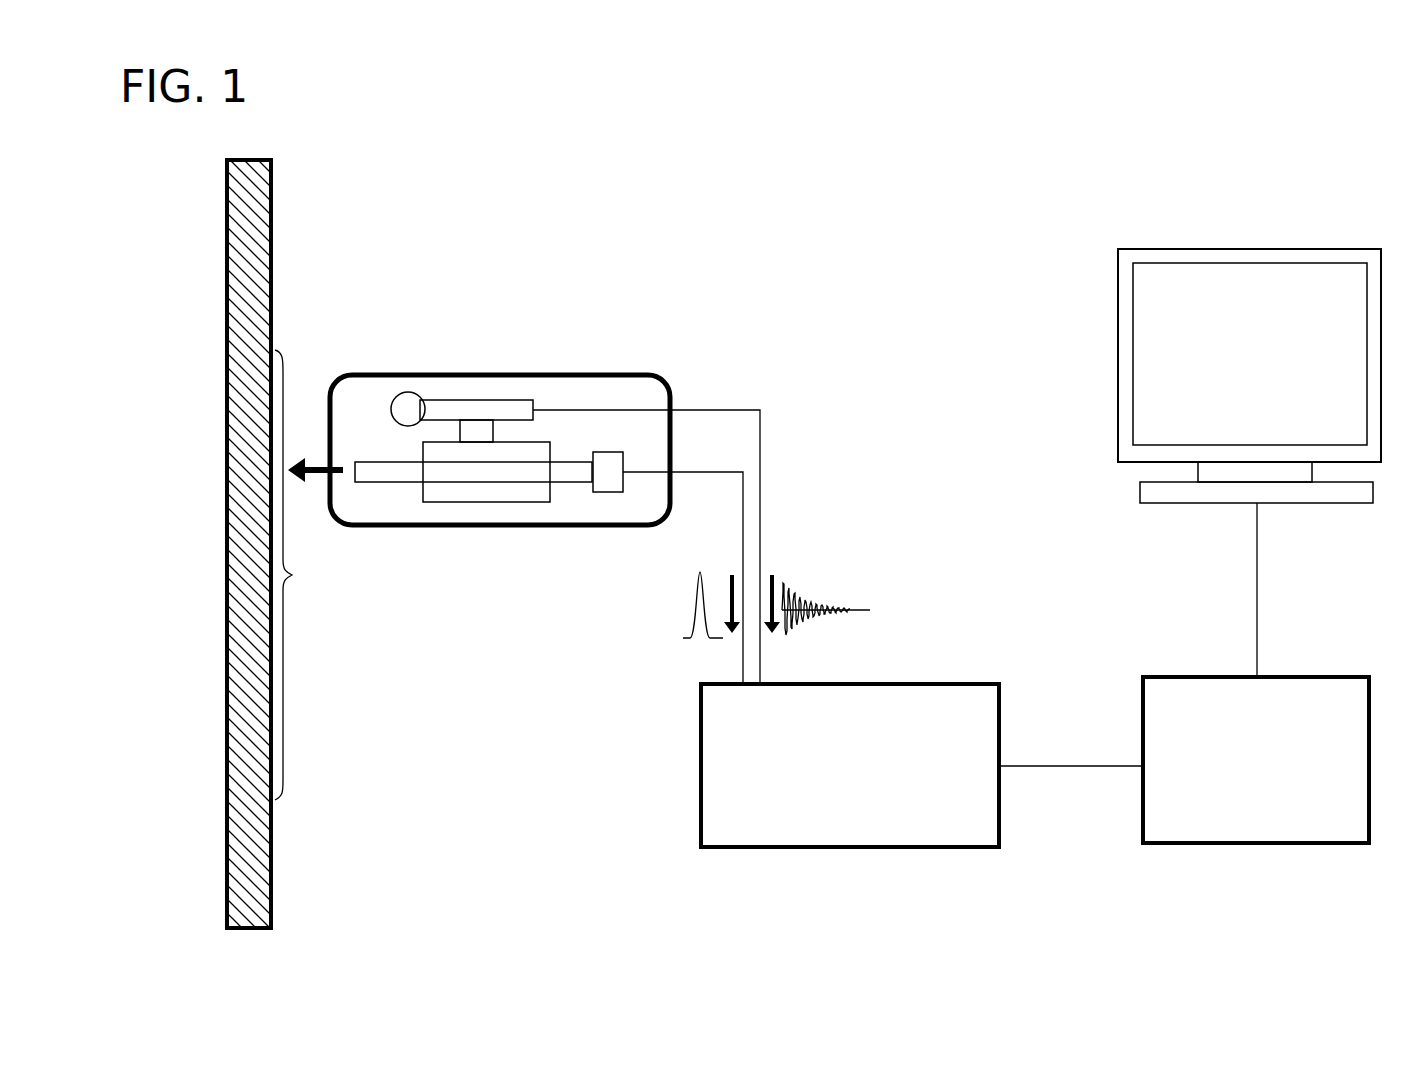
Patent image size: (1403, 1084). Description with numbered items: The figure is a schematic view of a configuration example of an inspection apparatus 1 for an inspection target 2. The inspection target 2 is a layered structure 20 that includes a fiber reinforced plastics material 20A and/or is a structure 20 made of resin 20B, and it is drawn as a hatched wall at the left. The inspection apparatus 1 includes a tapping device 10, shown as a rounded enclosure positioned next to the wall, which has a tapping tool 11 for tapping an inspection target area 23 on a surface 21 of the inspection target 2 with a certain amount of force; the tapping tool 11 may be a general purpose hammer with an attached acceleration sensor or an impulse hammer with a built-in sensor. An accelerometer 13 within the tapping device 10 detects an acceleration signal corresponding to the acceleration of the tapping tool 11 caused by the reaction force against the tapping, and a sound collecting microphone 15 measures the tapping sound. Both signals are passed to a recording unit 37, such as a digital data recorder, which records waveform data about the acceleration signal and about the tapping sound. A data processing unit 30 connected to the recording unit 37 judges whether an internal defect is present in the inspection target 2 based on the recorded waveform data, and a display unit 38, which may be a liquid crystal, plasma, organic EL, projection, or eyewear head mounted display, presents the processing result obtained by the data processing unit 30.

The inspection apparatus 1 is at (914, 203).
The inspection target 2 is at (271, 192).
The layered structure 20 is at (249, 544).
The fiber reinforced plastics (FRP) material 20A is at (249, 544).
The resin 20B is at (249, 544).
The surface 21 is at (271, 273).
The inspection target area 23 is at (305, 575).
The tapping device 10 is at (505, 525).
The tapping tool 11 is at (405, 483).
The accelerometer 13 is at (610, 493).
The sound collecting microphone 15 is at (415, 392).
The data processing unit 30 is at (1292, 845).
The recording unit 37 is at (847, 848).
The display unit 38 is at (1118, 307).